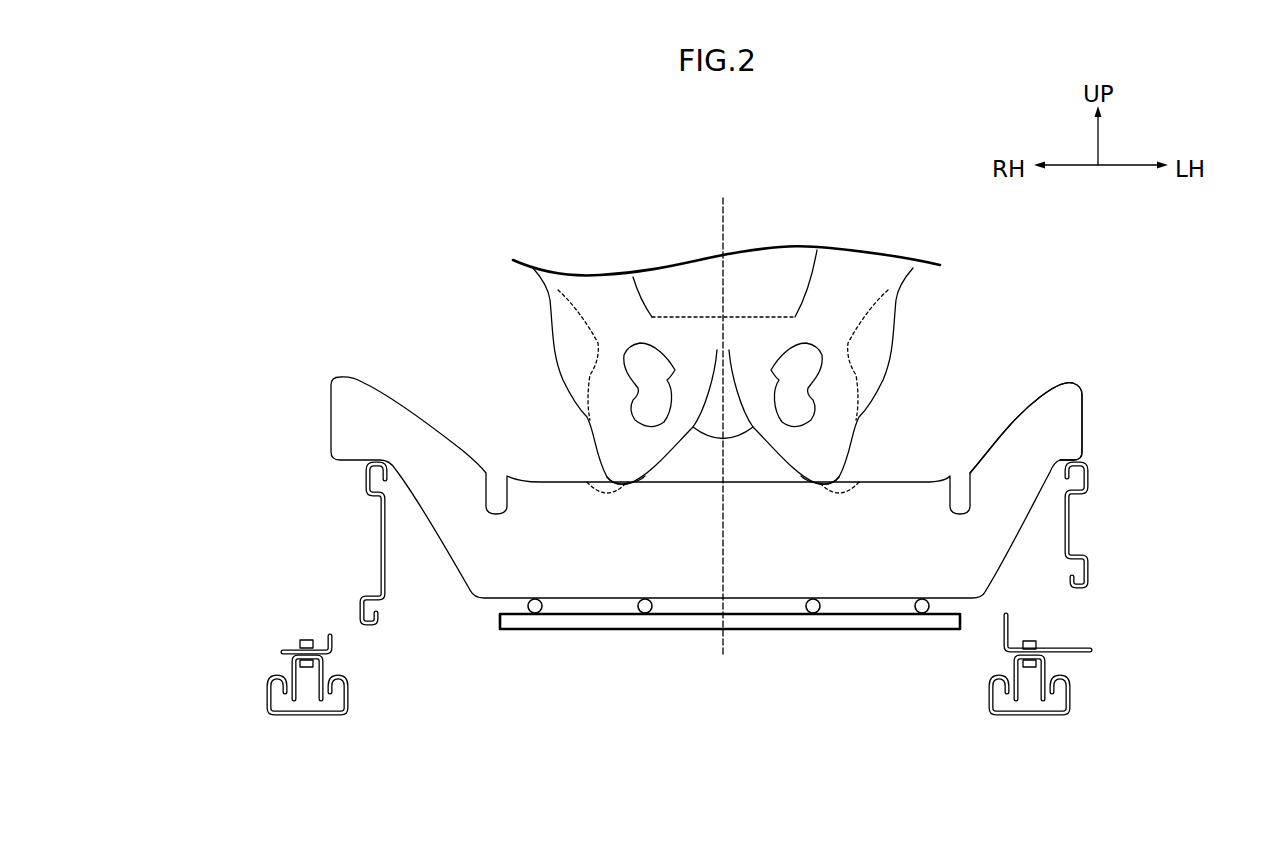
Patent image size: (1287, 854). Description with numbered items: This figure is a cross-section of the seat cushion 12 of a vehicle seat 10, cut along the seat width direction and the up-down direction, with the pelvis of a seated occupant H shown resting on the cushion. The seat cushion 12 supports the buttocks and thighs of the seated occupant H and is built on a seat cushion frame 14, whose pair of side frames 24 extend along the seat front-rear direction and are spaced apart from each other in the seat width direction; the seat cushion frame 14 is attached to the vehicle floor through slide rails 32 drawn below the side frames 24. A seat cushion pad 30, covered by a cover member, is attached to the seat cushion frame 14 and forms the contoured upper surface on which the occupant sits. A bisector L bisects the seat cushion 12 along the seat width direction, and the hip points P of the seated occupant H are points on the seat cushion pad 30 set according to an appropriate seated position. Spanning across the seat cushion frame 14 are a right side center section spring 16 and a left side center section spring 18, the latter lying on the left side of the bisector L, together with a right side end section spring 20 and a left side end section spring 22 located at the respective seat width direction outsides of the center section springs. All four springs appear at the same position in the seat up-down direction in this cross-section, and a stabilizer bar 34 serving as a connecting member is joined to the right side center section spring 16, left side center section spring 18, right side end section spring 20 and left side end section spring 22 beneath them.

The vehicle seat 10 is at (424, 199).
The seat cushion 12 is at (299, 430).
The seat cushion frame 14 is at (724, 543).
The right side center section spring 16 is at (651, 609).
The left side center section spring 18 is at (819, 609).
The right side end section spring 20 is at (541, 609).
The left side end section spring 22 is at (927, 610).
The side frame 24 is at (378, 540).
The seat cushion pad 30 is at (1040, 400).
The slide rail 32 is at (267, 695).
The stabilizer bar 34 is at (770, 629).
The seated occupant H is at (912, 277).
The hip point P is at (587, 477).
The bisector L is at (727, 220).